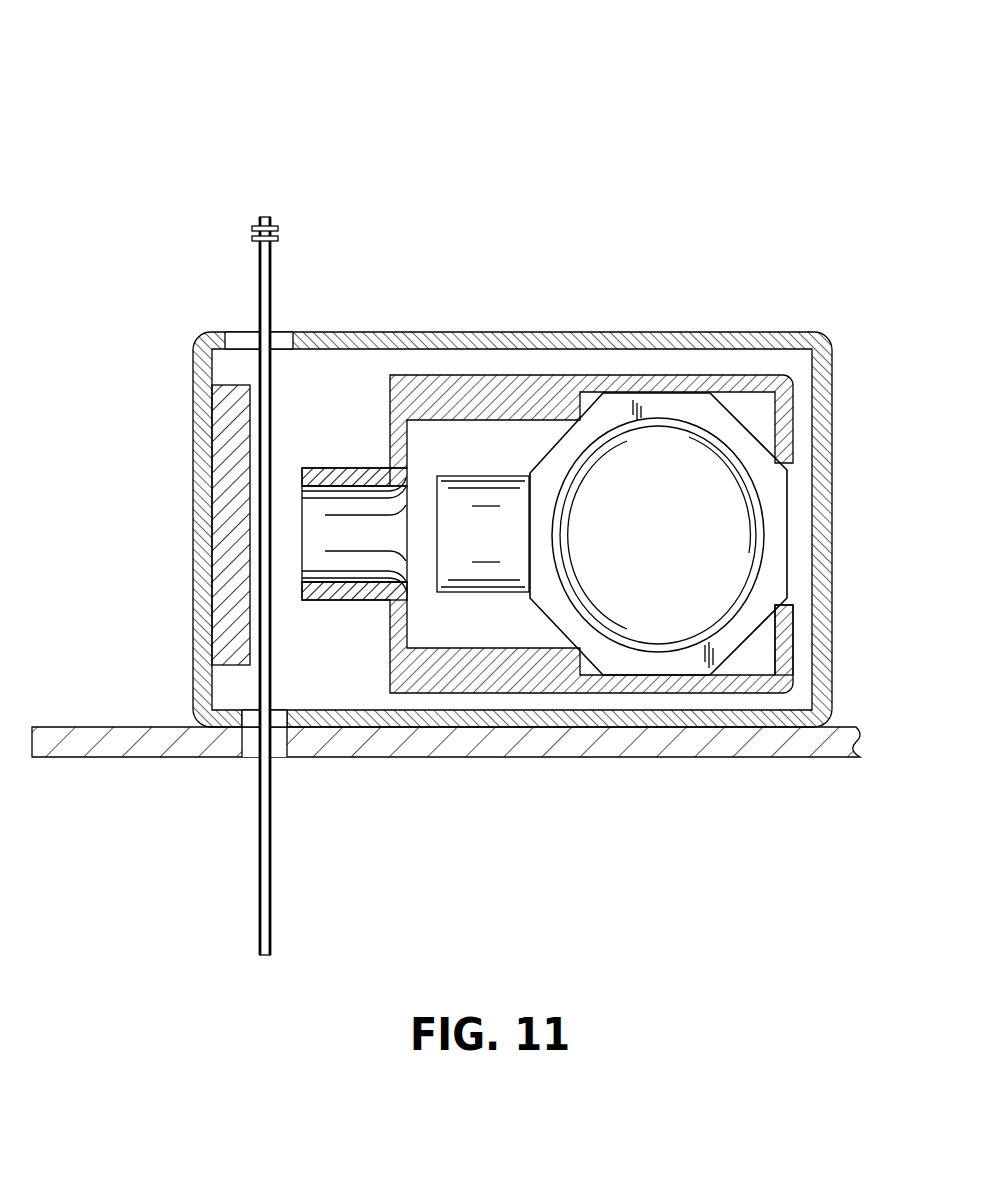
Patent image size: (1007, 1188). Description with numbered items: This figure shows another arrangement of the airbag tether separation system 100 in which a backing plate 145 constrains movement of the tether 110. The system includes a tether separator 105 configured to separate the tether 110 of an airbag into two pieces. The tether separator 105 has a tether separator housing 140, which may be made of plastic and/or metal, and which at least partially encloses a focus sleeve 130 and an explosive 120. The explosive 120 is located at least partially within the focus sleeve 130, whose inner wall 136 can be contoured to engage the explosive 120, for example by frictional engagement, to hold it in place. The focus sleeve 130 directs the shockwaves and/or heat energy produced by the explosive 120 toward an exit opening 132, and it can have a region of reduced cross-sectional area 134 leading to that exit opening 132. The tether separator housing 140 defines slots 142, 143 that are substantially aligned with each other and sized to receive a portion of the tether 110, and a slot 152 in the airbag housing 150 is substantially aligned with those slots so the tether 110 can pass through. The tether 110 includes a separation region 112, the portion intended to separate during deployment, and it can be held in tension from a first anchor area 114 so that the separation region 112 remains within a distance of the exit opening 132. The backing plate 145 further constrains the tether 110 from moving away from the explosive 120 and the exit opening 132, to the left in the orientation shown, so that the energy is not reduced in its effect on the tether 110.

The airbag tether separation system 100 is at (172, 41).
The tether separator 105 is at (568, 469).
The tether 110 is at (203, 562).
The separation region 112 is at (254, 520).
The first anchor area 114 is at (246, 212).
The explosive 120 is at (742, 414).
The focus sleeve 130 is at (501, 375).
The exit opening 132 is at (300, 556).
The region of reduced cross-sectional area 134 is at (360, 467).
The inner wall 136 is at (745, 673).
The tether separator housing 140 is at (833, 643).
The slot 142 is at (241, 321).
The slot 143 is at (278, 720).
The backing plate 145 is at (235, 578).
The airbag housing 150 is at (795, 760).
The slot 152 is at (280, 788).